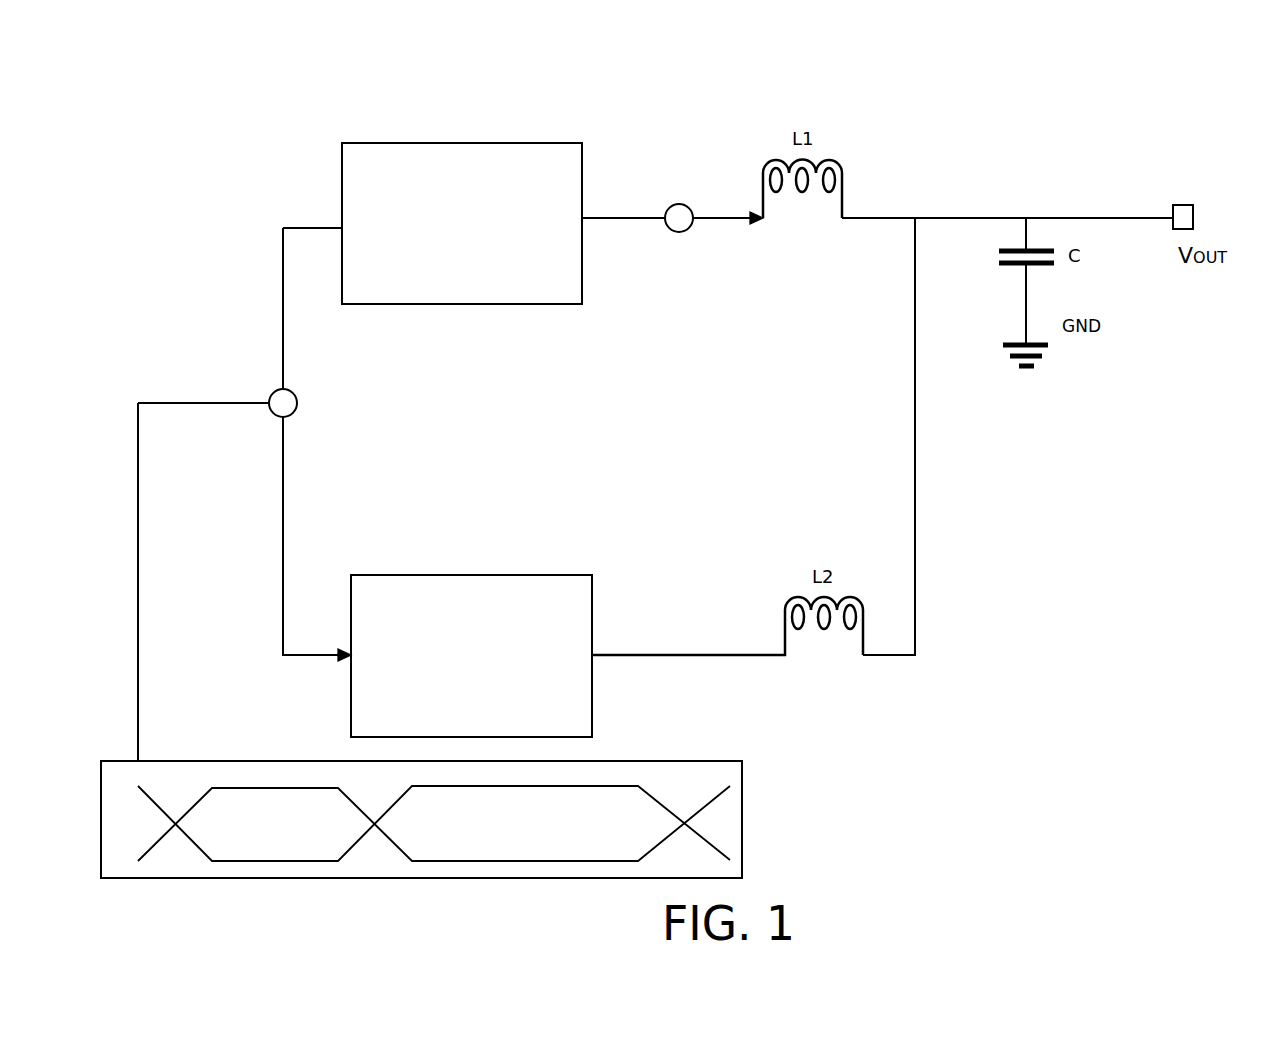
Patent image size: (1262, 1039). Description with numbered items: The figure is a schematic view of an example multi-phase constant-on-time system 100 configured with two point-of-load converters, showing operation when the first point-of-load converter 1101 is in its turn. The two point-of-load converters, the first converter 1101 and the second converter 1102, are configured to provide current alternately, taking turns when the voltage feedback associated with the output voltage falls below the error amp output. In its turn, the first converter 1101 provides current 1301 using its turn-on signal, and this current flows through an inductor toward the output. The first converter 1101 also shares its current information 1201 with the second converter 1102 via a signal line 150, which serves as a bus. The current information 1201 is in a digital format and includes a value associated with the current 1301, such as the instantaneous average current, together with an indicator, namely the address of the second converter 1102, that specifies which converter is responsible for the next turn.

The multi-phase constant-on-time (COT) system 100 is at (975, 71).
The point-of-load converter (PoL) #1 1101 is at (460, 143).
The point-of-load converter (PoL) #2 1102 is at (467, 575).
The current information 1201 is at (297, 401).
The current 1301 is at (679, 232).
The signal line 150 is at (283, 527).